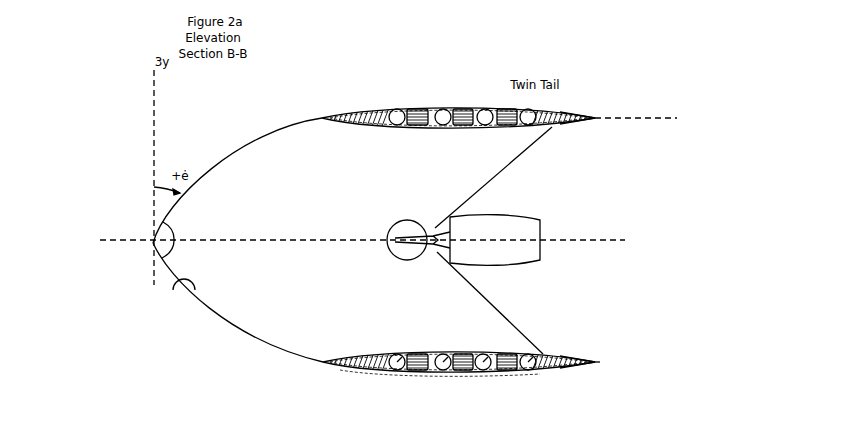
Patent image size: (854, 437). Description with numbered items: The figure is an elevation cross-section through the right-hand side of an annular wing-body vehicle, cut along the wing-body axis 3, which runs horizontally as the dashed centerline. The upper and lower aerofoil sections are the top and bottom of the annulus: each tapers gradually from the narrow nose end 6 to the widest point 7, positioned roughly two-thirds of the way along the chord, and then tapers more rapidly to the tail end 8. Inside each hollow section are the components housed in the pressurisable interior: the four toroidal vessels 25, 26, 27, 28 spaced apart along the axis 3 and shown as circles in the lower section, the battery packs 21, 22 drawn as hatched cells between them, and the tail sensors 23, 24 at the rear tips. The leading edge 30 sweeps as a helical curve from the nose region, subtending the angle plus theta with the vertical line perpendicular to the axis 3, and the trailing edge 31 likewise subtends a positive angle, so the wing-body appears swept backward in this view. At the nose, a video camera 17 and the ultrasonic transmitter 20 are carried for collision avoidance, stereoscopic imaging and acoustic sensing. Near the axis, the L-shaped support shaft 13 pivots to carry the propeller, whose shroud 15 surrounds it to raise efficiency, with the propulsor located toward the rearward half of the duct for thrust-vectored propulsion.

The wing-body axis 3 is at (100, 240).
The nose end 6 is at (636, 117).
The widest point 7 is at (505, 130).
The tail end 8 is at (598, 363).
The L-shaped support shaft 13 is at (398, 239).
The shroud 15 is at (438, 250).
The video camera 17 is at (157, 257).
The ultrasonic transmitter 20 is at (330, 366).
The battery pack 21 is at (183, 290).
The battery pack 22 is at (423, 367).
The tail sensor 23 is at (592, 114).
The tail sensor 24 is at (592, 368).
The toroidal vessel 25 is at (400, 352).
The toroidal vessel 26 is at (445, 352).
The toroidal vessel 27 is at (490, 352).
The toroidal vessel 28 is at (537, 352).
The leading edge 30 is at (223, 327).
The trailing edge 31 is at (510, 155).